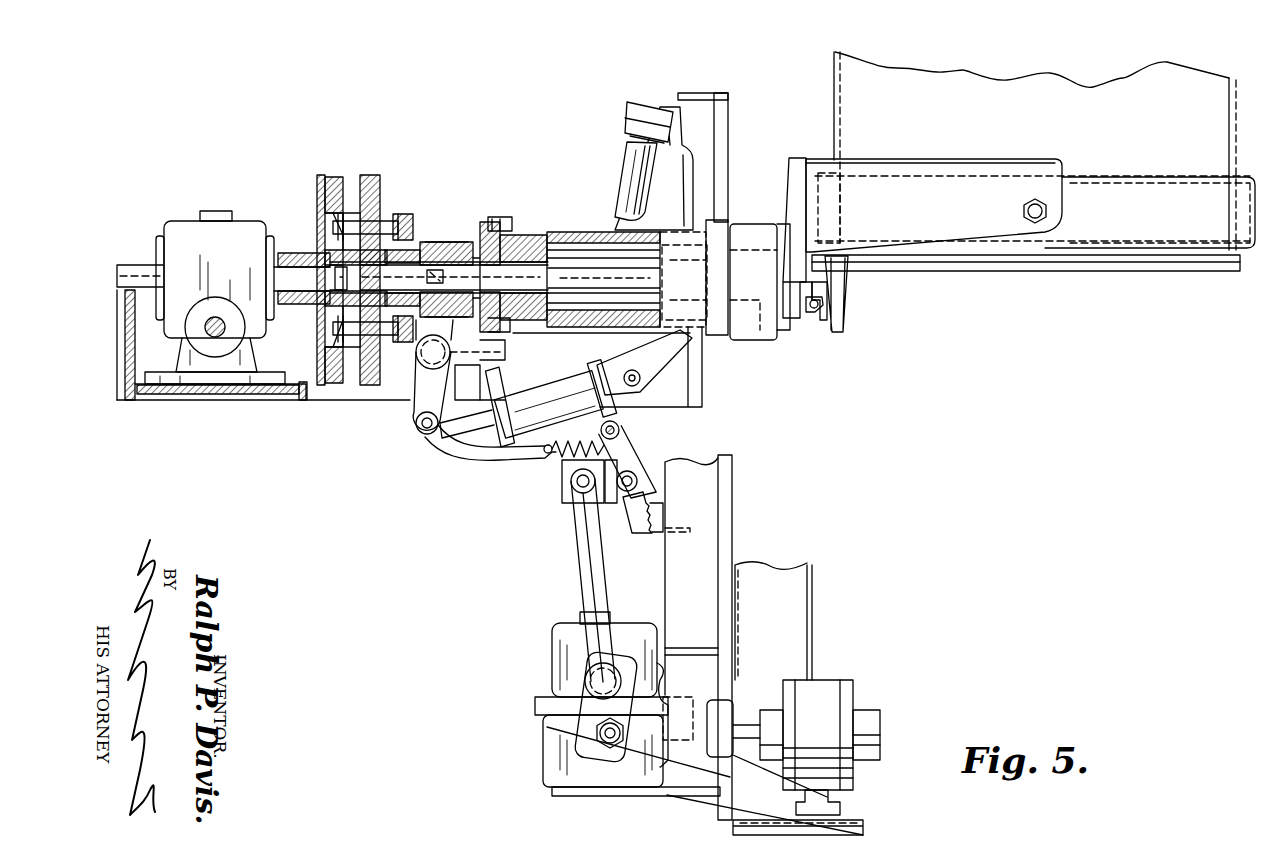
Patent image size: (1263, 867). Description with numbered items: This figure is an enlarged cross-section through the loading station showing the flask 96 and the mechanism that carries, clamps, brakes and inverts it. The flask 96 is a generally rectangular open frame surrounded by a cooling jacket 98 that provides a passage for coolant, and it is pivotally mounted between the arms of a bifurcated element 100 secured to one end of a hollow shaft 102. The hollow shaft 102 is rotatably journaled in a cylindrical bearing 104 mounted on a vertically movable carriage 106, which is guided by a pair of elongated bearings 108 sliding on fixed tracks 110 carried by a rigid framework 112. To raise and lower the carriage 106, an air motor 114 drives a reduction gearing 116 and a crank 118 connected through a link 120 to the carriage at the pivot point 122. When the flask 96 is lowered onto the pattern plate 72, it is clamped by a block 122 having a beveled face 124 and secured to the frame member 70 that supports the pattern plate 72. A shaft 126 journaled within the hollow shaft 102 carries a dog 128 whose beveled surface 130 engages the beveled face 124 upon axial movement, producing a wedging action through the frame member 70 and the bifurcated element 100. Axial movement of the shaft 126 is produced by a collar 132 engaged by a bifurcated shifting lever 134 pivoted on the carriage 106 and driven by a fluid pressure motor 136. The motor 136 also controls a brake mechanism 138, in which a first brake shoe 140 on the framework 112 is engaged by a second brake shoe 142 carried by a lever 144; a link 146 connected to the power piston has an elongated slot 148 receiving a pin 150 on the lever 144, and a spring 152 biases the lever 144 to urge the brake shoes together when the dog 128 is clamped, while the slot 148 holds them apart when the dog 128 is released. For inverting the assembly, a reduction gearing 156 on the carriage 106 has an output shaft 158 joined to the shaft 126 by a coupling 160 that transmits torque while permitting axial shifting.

The frame member 70 is at (835, 275).
The pattern plate 72 is at (1210, 258).
The flask 96 is at (1215, 85).
The jacket 98 is at (1175, 192).
The bifurcated element 100 is at (1046, 160).
The hollow shaft 102 is at (530, 262).
The cylindrical bearing 104 is at (562, 232).
The carriage 106 is at (330, 400).
The elongated bearings 108 is at (680, 103).
The fixed tracks 110 is at (634, 160).
The rigid framework 112 is at (738, 118).
The air motor 114 is at (822, 690).
The reduction gearing 116 is at (560, 632).
The crank 118 is at (585, 706).
The link 120 is at (575, 540).
The block 122 is at (834, 303).
The beveled face 124 is at (834, 327).
The shaft 126 is at (512, 230).
The dog 128 is at (818, 330).
The beveled surface 130 is at (795, 325).
The collar 132 is at (438, 242).
The shifting lever 134 is at (430, 383).
The fluid pressure motor 136 is at (636, 392).
The brake mechanism 138 is at (642, 448).
The first brake shoe 140 is at (654, 522).
The second brake shoe 142 is at (645, 495).
The lever 144 is at (624, 470).
The link 146 is at (472, 450).
The elongated slot 148 is at (597, 432).
The pin 150 is at (620, 425).
The spring 152 is at (553, 456).
The reduction gearing 156 is at (238, 228).
The output shaft 158 is at (282, 268).
The coupling 160 is at (328, 176).